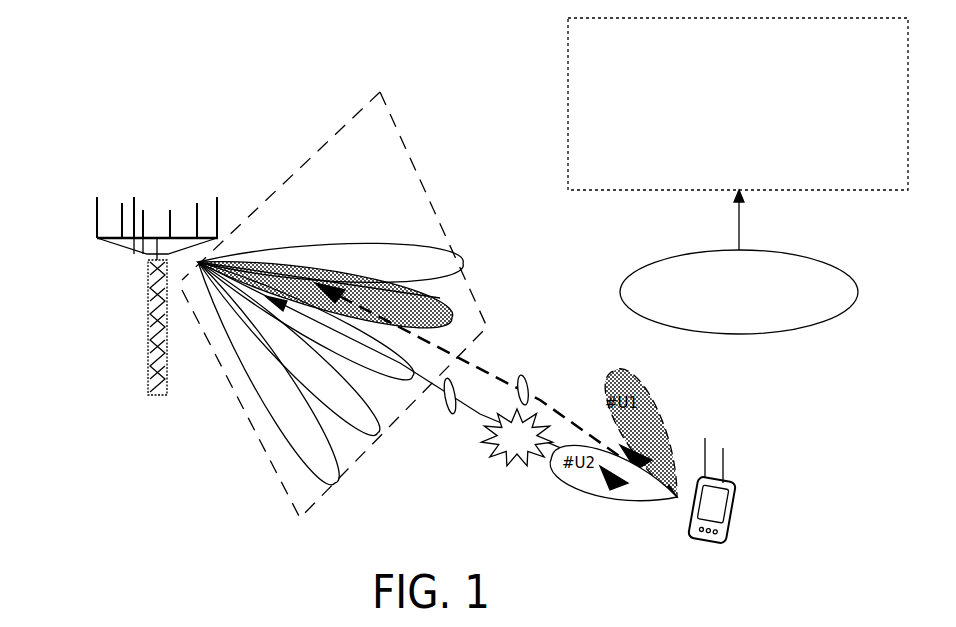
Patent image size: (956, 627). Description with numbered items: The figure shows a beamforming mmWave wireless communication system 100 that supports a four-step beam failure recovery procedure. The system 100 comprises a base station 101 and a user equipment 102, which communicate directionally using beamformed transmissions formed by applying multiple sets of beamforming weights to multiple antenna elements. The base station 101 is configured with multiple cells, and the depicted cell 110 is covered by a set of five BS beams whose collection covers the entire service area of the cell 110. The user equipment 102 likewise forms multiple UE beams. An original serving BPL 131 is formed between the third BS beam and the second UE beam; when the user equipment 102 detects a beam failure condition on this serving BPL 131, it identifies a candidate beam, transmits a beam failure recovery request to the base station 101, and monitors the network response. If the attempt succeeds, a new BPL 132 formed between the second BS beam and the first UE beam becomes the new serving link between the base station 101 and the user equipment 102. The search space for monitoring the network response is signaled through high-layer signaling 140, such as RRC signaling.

The beamforming wireless communication system 100 is at (122, 103).
The base station 101 is at (157, 207).
The user equipment 102 is at (716, 447).
The cell 110 is at (373, 168).
The serving BPL 131 is at (449, 415).
The new BPL 132 is at (523, 376).
The high-layer signaling 140 is at (848, 273).